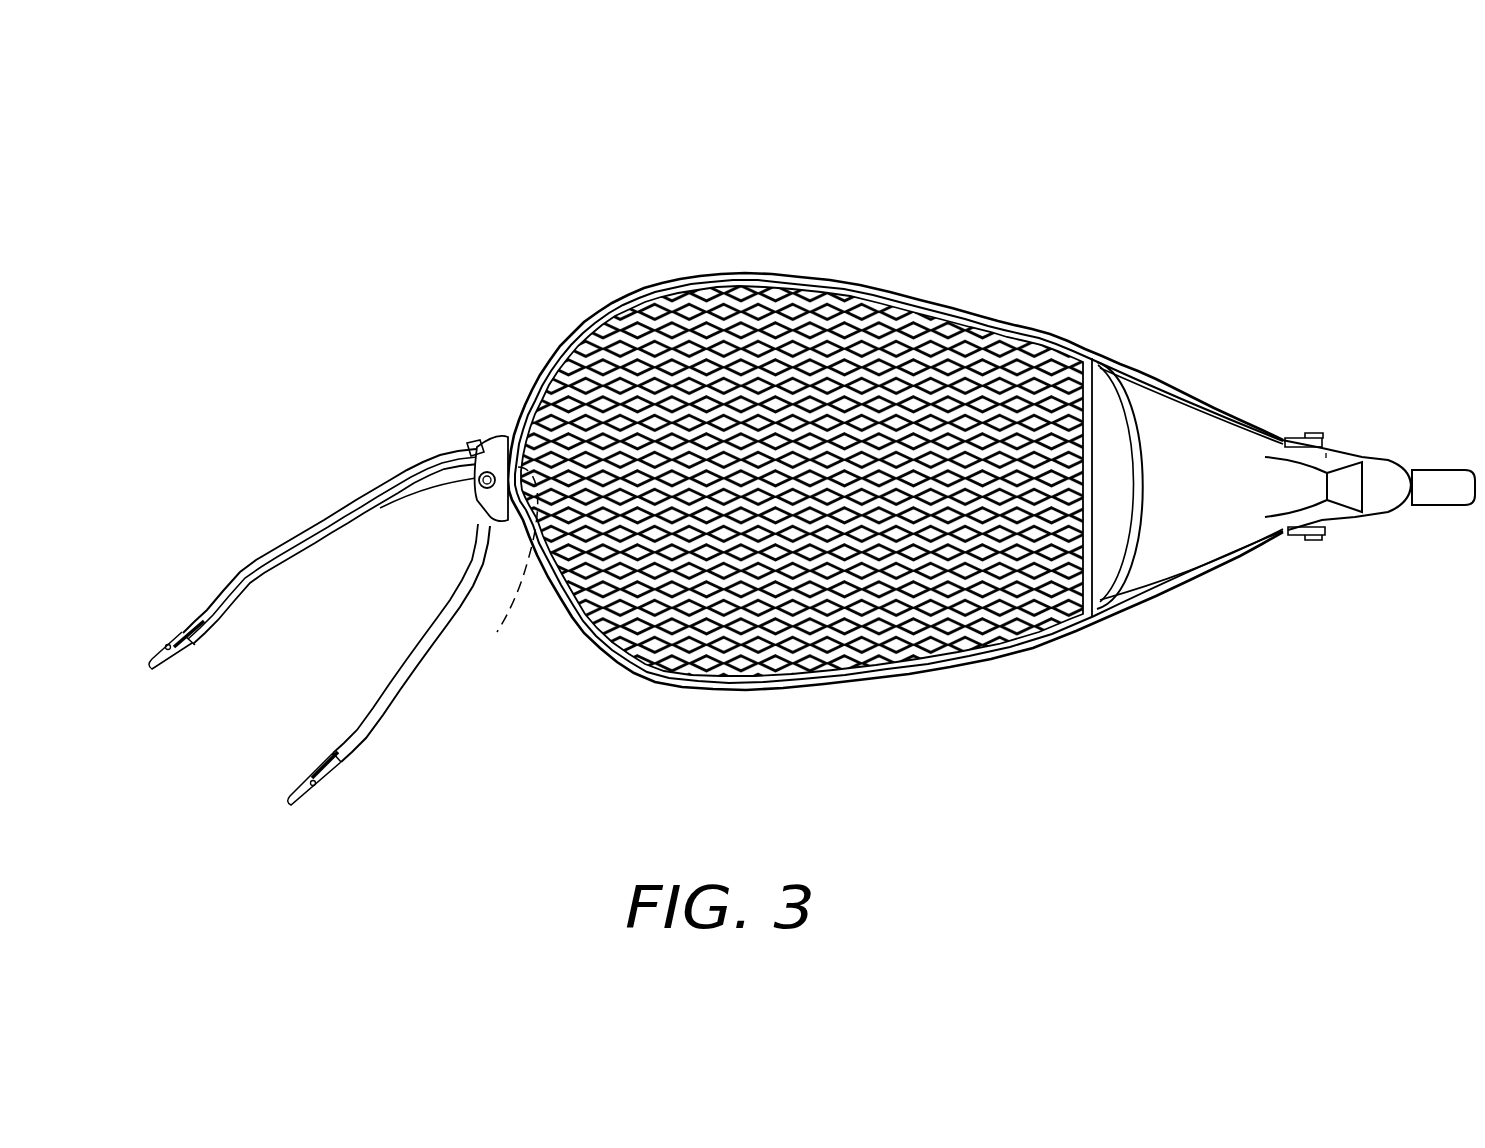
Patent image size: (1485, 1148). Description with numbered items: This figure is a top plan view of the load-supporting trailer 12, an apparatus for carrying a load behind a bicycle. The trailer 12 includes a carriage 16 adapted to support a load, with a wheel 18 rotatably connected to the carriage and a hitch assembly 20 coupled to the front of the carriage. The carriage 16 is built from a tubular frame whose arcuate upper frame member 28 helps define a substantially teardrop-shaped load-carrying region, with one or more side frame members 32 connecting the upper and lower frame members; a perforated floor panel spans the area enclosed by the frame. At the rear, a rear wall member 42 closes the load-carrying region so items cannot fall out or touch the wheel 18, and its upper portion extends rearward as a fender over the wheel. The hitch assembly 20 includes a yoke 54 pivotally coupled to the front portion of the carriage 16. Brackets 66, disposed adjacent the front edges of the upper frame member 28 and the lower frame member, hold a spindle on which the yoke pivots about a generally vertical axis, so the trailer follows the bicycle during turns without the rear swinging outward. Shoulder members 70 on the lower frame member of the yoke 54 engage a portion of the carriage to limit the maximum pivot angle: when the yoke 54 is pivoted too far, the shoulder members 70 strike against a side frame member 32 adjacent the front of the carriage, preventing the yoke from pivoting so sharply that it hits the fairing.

The load-supporting trailer 12 is at (378, 166).
The carriage 16 is at (944, 260).
The wheel 18 is at (1440, 464).
The hitch assembly 20 is at (281, 438).
The upper frame member 28 is at (585, 648).
The side frame member 32 is at (498, 567).
The rear wall member 42 is at (1163, 420).
The yoke 54 is at (253, 568).
The bracket 66 is at (478, 503).
The shoulder member 70 is at (476, 442).